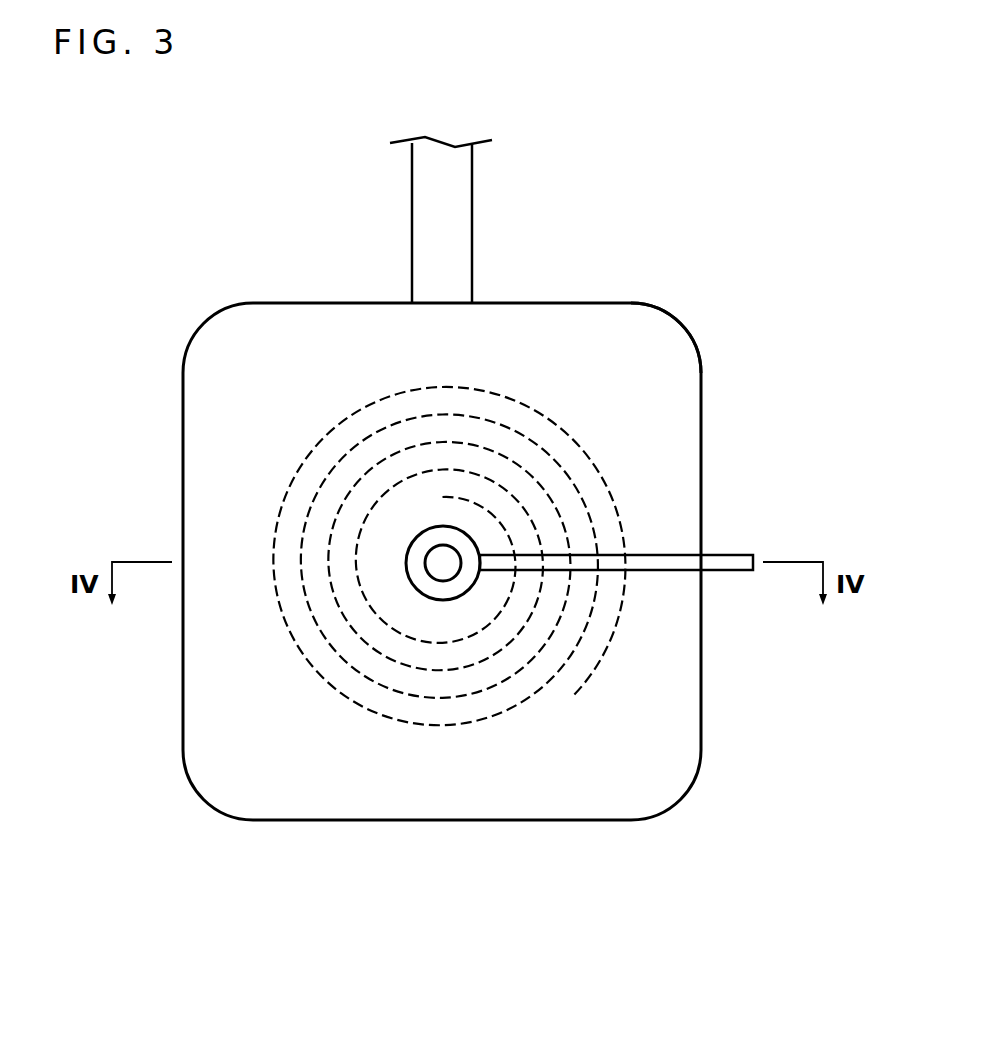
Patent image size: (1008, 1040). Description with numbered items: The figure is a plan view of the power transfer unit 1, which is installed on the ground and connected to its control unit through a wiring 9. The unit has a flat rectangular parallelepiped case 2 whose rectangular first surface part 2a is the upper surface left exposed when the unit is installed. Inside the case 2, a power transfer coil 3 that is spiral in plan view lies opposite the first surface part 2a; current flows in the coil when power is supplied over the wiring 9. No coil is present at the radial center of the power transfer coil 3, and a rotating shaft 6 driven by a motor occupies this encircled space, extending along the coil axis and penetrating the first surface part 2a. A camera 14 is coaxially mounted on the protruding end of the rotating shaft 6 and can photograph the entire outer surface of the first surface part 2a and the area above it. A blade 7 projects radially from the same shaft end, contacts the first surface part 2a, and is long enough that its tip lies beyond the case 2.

The power transfer unit 1 is at (857, 146).
The case 2 is at (607, 298).
The first surface part 2a is at (648, 340).
The power transfer coil 3 is at (607, 482).
The rotating shaft 6 is at (422, 545).
The blade 7 is at (725, 562).
The wiring 9 is at (455, 222).
The camera 14 is at (443, 568).